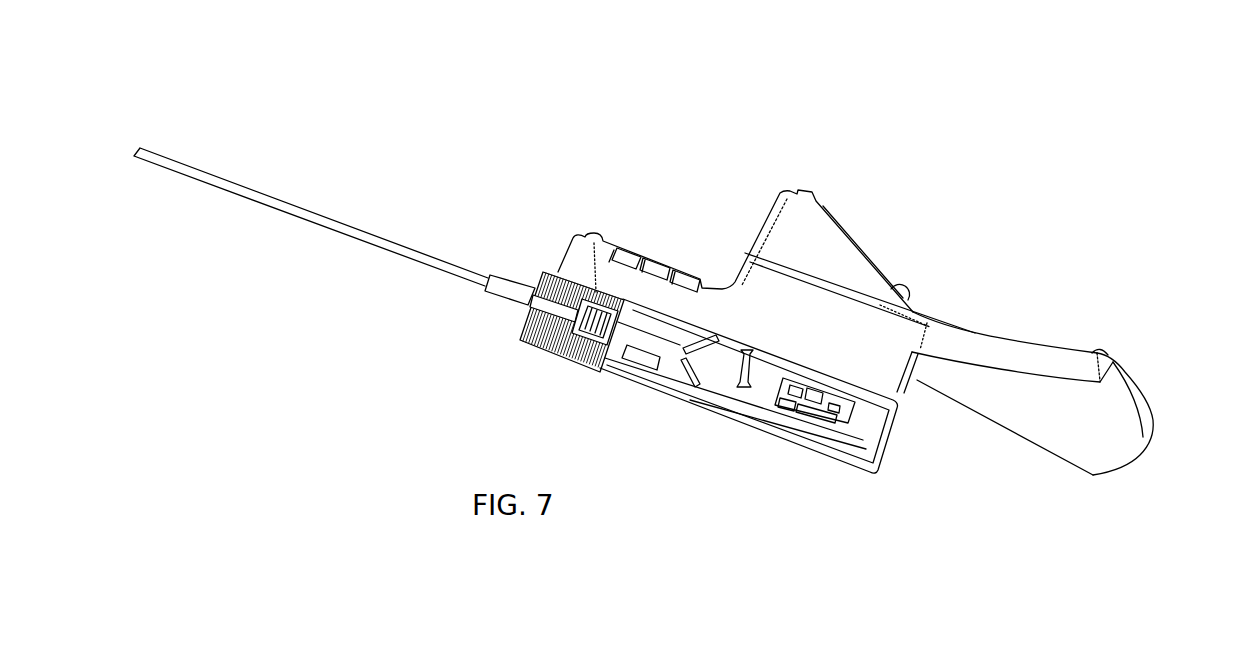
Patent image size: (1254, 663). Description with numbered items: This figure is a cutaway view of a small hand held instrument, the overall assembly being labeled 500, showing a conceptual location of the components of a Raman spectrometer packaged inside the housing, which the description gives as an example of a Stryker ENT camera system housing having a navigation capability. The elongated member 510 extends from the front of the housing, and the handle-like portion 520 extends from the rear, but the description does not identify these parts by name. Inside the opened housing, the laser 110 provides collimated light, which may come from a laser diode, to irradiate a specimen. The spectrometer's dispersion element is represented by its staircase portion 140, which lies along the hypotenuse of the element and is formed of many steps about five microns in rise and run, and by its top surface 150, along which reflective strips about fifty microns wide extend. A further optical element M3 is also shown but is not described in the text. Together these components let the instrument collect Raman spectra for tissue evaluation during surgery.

The biopsy device assembly 500 is at (985, 43).
The needle 510 is at (302, 207).
The laser 110 is at (683, 335).
The staircase portion 140 is at (648, 362).
The motor M3 is at (740, 373).
The top surface 150 is at (840, 427).
The handle 520 is at (1095, 352).